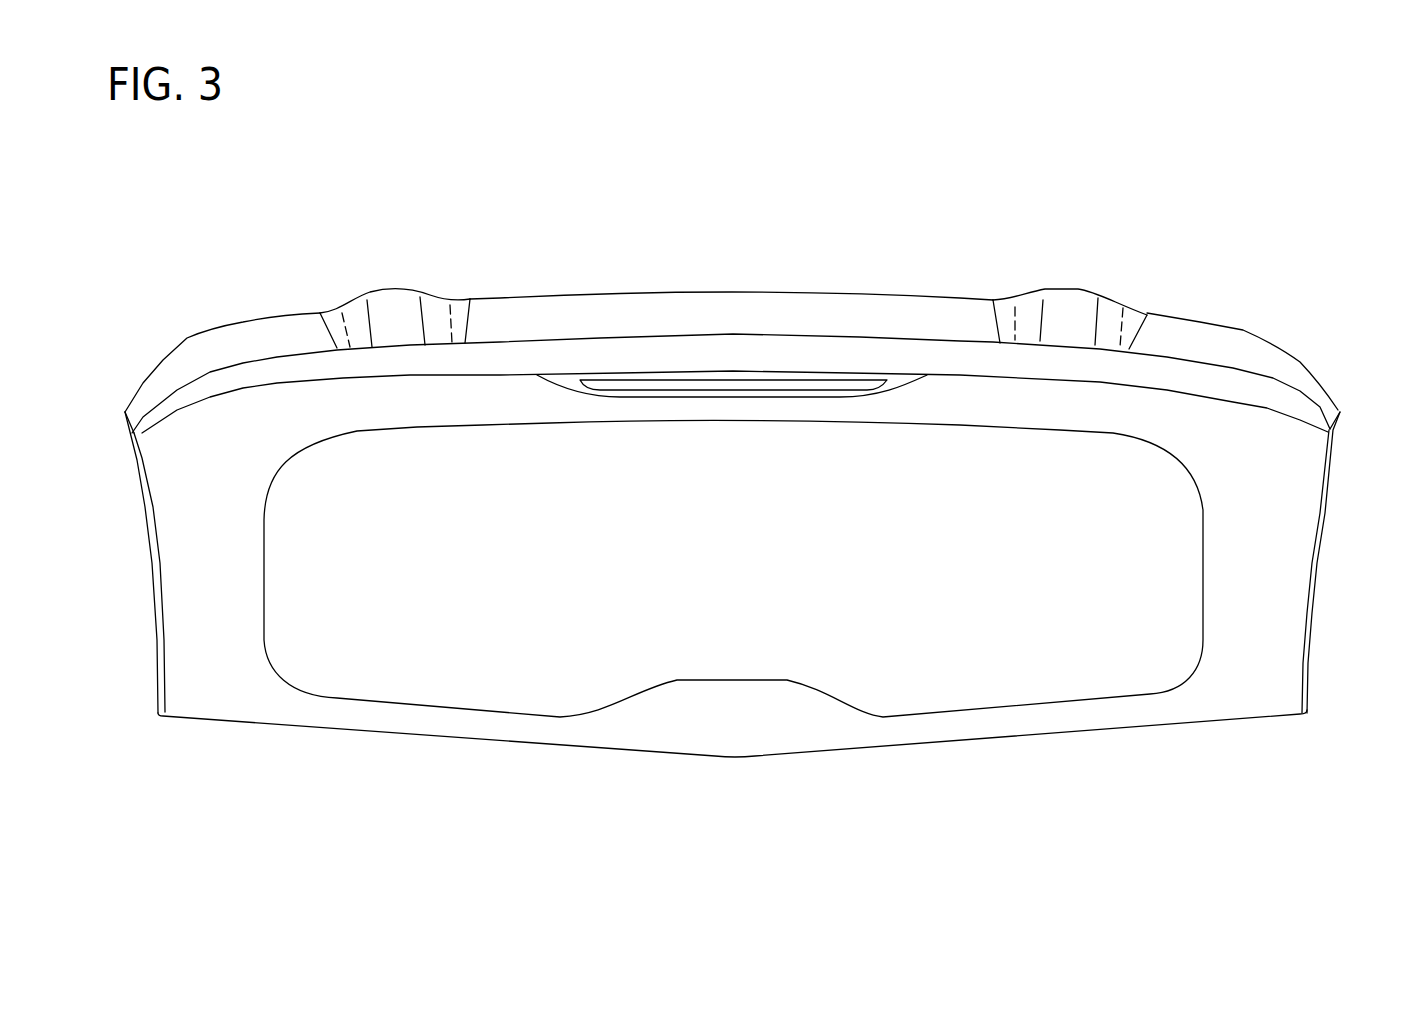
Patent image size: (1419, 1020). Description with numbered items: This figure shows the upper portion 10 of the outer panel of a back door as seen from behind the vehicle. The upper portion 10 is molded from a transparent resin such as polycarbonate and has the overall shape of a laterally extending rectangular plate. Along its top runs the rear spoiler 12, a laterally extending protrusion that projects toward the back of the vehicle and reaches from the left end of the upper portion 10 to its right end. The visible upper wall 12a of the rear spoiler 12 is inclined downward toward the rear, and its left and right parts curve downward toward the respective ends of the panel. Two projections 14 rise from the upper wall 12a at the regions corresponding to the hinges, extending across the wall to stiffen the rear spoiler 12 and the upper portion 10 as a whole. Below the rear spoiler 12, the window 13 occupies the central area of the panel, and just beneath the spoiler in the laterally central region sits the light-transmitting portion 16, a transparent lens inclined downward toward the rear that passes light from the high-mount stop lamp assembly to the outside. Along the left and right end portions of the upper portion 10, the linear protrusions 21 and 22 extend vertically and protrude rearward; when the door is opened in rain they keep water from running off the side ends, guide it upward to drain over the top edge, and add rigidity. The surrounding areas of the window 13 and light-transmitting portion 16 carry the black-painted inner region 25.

The upper portion 10 is at (943, 247).
The rear spoiler 12 is at (722, 322).
The upper wall 12a is at (857, 313).
The window 13 is at (278, 535).
The projections 14 is at (393, 288).
The light-transmitting portion 16 is at (648, 387).
The left linear protrusion 21 is at (160, 563).
The right linear protrusion 22 is at (1310, 563).
The region painted with black paint 25 is at (455, 722).